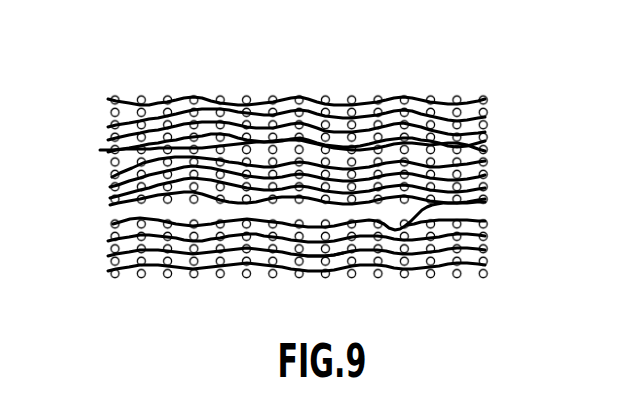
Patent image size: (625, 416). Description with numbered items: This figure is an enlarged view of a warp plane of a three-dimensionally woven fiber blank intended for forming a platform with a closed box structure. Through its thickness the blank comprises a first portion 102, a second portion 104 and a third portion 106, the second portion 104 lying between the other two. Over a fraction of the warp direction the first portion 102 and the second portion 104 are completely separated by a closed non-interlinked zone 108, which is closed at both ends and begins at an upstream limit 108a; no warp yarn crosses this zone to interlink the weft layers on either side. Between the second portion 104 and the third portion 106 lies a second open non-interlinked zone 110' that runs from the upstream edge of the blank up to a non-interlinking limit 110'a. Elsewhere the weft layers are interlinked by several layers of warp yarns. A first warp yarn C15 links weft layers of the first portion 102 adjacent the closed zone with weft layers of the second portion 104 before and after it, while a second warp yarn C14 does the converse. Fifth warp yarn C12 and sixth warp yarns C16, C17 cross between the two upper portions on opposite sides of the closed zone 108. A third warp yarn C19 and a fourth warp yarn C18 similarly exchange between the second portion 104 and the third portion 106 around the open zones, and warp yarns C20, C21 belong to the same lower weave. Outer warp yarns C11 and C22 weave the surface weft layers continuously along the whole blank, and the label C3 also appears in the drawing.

The first portion 102 is at (500, 100).
The second portion 104 is at (500, 163).
The third portion 106 is at (500, 228).
The closed non-interlinked zone 108 is at (524, 156).
The upstream limit 108a is at (224, 85).
The second open non-interlinked zone 110' is at (66, 223).
The non-interlinking limit 110'a is at (417, 292).
The warp yarn C11 is at (296, 78).
The fifth warp yarn C12 is at (296, 89).
The weft thread C3 is at (296, 96).
The second warp yarn C14 is at (271, 104).
The first warp yarn C15 is at (271, 120).
The sixth warp yarn C16 is at (271, 189).
The sixth warp yarn C17 is at (297, 256).
The fourth warp yarn C18 is at (320, 261).
The third warp yarn C19 is at (271, 281).
The warp yarn C20 is at (296, 292).
The warp yarn C21 is at (260, 285).
The warp yarn C22 is at (296, 277).